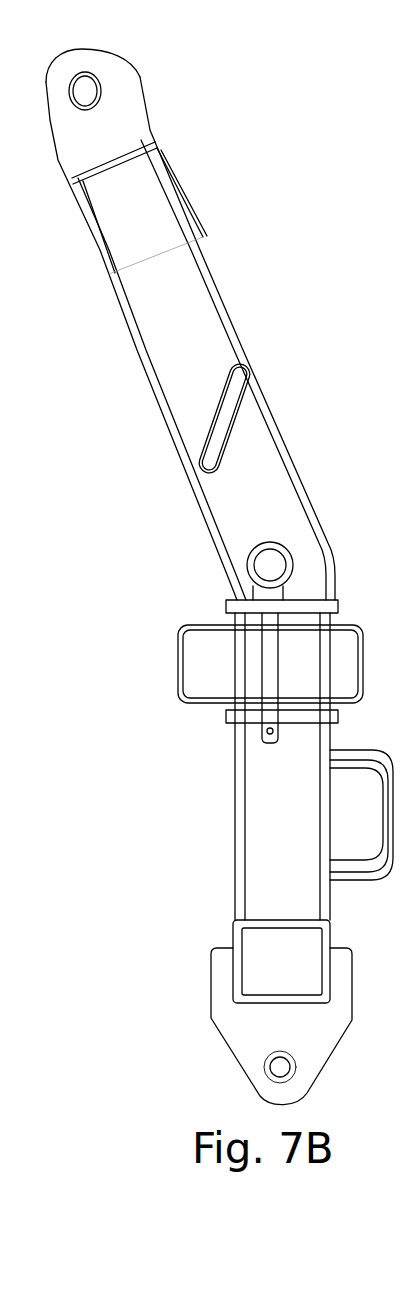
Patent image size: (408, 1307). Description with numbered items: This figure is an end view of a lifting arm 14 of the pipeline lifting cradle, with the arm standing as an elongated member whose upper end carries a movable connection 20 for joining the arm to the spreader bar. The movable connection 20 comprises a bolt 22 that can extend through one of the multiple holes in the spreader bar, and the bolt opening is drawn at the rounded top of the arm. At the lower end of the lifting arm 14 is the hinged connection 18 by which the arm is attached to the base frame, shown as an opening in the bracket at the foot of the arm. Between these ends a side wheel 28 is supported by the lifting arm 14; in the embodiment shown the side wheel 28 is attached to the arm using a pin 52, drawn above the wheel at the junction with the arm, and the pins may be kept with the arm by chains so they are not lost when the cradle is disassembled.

The lifting arm 14 is at (297, 202).
The hinged connection 18 is at (268, 1066).
The movable connection 20 is at (157, 62).
The bolt 22 is at (88, 94).
The side wheel 28 is at (178, 663).
The pin 52 is at (253, 557).